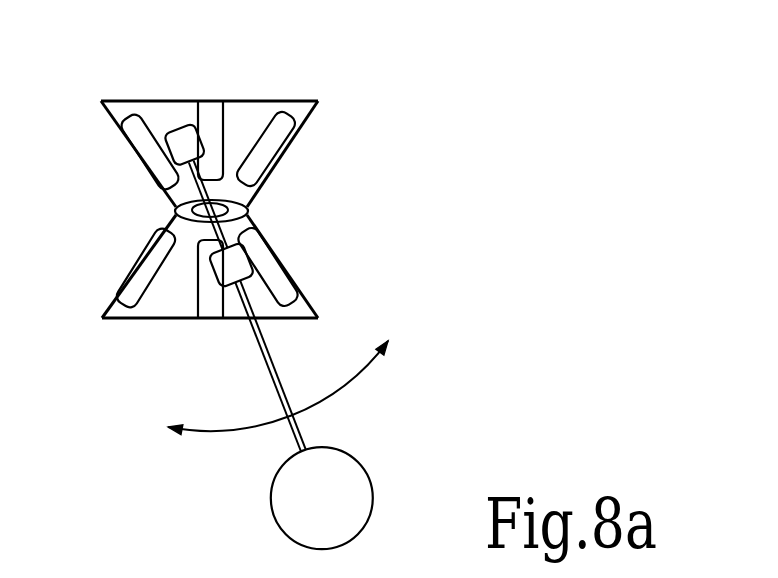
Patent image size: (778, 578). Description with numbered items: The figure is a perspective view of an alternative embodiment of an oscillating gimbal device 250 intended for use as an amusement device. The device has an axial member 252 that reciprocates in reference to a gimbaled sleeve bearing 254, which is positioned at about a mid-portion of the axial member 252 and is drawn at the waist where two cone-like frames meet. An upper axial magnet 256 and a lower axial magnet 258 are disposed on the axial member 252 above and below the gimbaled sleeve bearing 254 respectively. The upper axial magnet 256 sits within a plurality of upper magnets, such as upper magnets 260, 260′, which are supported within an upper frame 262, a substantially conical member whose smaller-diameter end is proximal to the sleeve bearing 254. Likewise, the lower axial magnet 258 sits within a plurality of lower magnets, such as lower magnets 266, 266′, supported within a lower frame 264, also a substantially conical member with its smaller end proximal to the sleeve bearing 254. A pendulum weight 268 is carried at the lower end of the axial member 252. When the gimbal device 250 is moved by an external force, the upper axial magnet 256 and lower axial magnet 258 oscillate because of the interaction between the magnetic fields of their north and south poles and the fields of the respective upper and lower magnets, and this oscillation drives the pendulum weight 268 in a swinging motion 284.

The oscillating gimbal device 250 is at (413, 165).
The axial member 252 is at (277, 362).
The gimbaled sleeve bearing 254 is at (250, 205).
The upper axial magnet 256 is at (187, 140).
The lower axial magnet 258 is at (262, 302).
The upper magnet 260 is at (310, 130).
The upper magnet 260′ is at (212, 122).
The upper frame 262 is at (288, 153).
The lower frame 264 is at (124, 292).
The lower magnet 266 is at (280, 282).
The lower magnet 266′ is at (208, 307).
The pendulum weight 268 is at (343, 482).
The swinging motion 284 is at (340, 388).